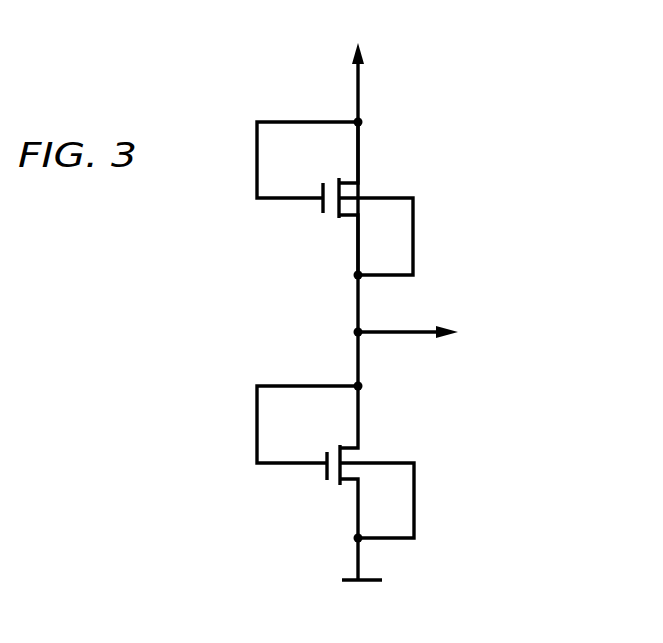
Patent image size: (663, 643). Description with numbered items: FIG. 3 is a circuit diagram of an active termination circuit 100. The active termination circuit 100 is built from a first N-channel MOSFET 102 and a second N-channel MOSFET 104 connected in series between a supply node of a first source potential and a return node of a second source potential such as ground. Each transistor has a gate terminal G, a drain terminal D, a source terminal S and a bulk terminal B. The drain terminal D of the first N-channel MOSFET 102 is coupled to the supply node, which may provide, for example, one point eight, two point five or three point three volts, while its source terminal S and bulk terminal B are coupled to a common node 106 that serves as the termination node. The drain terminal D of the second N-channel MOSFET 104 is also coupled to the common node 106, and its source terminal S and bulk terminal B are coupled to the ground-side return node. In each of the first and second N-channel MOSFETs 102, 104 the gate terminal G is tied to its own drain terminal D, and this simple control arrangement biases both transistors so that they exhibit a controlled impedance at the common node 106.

The active termination circuit 100 is at (226, 84).
The first N-channel MOSFET 102 is at (437, 126).
The second N-channel MOSFET 104 is at (441, 534).
The common node 106 is at (431, 329).